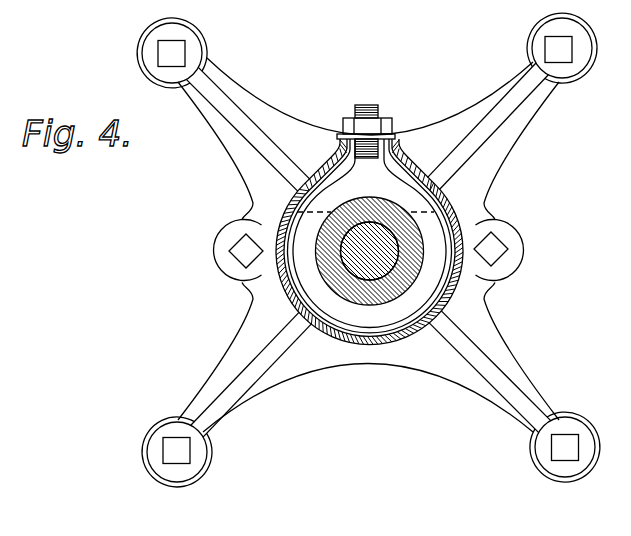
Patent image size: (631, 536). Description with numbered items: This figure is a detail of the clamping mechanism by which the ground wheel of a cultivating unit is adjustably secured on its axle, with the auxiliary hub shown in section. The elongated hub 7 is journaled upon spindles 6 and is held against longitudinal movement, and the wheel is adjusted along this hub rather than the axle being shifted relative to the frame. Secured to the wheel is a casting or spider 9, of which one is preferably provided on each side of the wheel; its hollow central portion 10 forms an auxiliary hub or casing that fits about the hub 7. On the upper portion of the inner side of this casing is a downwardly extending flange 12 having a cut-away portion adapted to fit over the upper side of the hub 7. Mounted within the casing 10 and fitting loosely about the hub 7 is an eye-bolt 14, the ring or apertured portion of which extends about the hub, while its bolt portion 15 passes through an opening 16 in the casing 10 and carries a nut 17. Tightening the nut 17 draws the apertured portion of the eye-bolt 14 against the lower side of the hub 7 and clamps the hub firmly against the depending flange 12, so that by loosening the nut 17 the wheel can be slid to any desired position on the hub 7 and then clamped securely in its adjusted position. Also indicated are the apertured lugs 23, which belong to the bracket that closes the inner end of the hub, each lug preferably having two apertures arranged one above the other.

The spindle 6 is at (359, 277).
The elongated hub 7 is at (384, 277).
The casting or spider 9 is at (477, 319).
The hollow central portion 10 is at (445, 210).
The downwardly extending flange 12 is at (296, 207).
The eye-bolt 14 is at (317, 283).
The bolt portion 15 is at (373, 106).
The opening 16 is at (344, 150).
The nut 17 is at (390, 122).
The apertured lug 23 is at (349, 197).